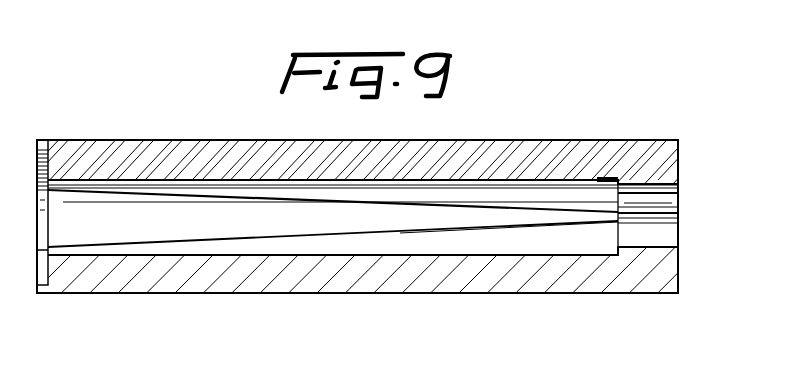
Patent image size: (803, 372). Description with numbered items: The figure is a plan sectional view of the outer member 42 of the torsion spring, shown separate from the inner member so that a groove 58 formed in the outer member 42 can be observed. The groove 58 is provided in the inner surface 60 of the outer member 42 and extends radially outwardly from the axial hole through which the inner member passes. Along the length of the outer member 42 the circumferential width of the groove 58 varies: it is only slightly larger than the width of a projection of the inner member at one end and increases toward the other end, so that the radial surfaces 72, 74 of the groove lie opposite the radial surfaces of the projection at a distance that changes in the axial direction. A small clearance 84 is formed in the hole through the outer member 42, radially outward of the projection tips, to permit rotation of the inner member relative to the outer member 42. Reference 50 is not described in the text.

The outer member 42 is at (298, 150).
The end plug 50 is at (679, 192).
The inner surface 60 is at (437, 190).
The radial surface 72 is at (501, 209).
The small clearance 84 is at (607, 178).
The groove 58 is at (453, 217).
The radial surface 74 is at (513, 223).